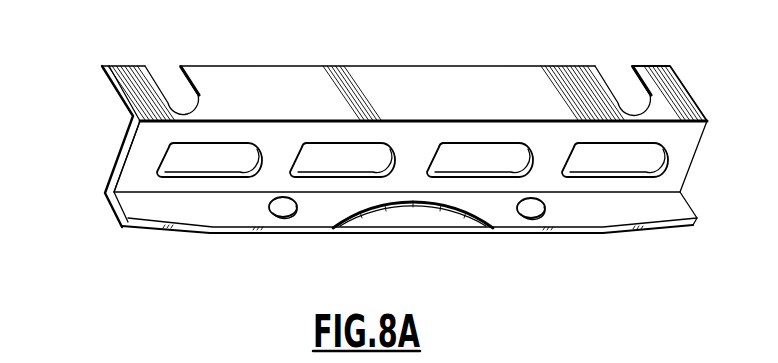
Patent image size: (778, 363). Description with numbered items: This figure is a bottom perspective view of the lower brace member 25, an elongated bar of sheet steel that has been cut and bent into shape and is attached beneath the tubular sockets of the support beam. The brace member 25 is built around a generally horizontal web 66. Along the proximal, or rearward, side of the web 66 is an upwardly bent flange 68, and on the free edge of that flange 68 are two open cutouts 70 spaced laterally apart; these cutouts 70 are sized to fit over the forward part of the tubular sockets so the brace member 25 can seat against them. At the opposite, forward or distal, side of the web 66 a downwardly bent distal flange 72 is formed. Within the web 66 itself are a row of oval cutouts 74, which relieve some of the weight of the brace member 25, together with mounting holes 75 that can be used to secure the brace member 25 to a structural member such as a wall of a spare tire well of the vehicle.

The lower brace member 25 is at (82, 238).
The web 66 is at (142, 154).
The upwardly bent flange 68 is at (518, 87).
The open cutouts 70 is at (168, 75).
The downwardly bent distal flange 72 is at (438, 215).
The oval cutouts 74 is at (342, 153).
The mounting holes 75 is at (281, 217).